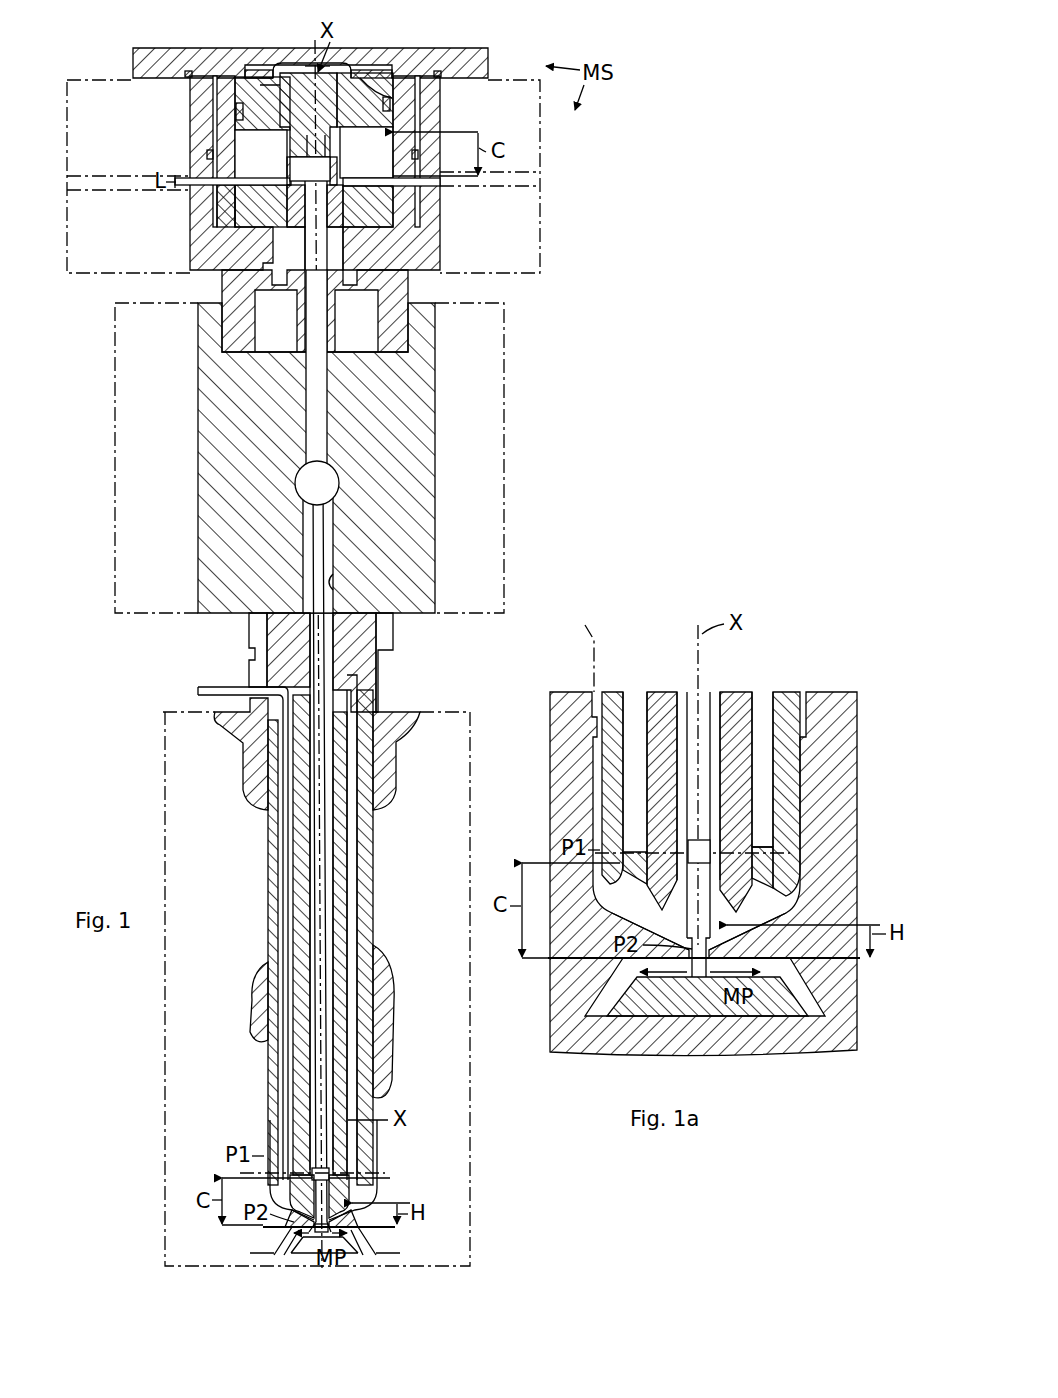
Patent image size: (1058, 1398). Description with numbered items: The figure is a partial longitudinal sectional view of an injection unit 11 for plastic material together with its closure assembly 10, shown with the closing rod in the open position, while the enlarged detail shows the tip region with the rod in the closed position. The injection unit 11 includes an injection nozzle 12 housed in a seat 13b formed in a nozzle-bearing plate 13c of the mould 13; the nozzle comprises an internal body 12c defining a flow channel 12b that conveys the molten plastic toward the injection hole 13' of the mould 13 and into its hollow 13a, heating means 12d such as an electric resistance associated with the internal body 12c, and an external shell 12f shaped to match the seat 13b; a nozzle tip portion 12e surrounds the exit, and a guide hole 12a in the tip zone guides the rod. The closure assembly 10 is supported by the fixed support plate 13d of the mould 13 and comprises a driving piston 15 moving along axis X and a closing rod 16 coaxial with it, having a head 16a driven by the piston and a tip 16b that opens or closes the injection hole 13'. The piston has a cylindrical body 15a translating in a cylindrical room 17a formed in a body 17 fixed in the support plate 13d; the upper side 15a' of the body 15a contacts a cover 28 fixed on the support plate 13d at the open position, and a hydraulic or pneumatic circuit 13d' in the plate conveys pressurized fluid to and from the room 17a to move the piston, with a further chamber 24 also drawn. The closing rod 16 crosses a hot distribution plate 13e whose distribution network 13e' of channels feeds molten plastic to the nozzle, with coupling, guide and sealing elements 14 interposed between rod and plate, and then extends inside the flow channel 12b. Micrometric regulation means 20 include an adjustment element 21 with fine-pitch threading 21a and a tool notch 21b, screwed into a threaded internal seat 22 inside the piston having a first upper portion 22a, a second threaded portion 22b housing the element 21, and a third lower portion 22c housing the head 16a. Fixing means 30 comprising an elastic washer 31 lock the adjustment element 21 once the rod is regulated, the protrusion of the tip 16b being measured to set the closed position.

In FIG. 1, the closure assembly 10 is at (458, 38).
In FIG. 1A, the closure assembly 10 is at (630, 1008).
In FIG. 1, the injection unit 11 is at (128, 74).
In FIG. 1A, the injection unit 11 is at (760, 626).
In FIG. 1, the injection nozzle 12 is at (394, 674).
In FIG. 1A, the guide hole 12a is at (708, 904).
In FIG. 1, the flow channel 12b is at (330, 948).
In FIG. 1A, the flow channel 12b is at (715, 700).
In FIG. 1, the internal body 12c is at (272, 642).
In FIG. 1A, the internal body 12c is at (655, 695).
In FIG. 1, the heating means 12d is at (210, 686).
In FIG. 1A, the heating means 12d is at (762, 692).
In FIG. 1, the nozzle tip 12e is at (360, 1160).
In FIG. 1, the external shell 12f is at (275, 900).
In FIG. 1A, the external shell 12f is at (606, 692).
In FIG. 1, the mould 13 is at (338, 713).
In FIG. 1A, the mould 13 is at (543, 1084).
In FIG. 1, the injection hole 13' is at (303, 1251).
In FIG. 1A, the injection hole 13' is at (717, 1007).
In FIG. 1, the hollow 13a is at (382, 1248).
In FIG. 1A, the hollow 13a is at (800, 990).
In FIG. 1, the seat 13b is at (270, 815).
In FIG. 1A, the seat 13b is at (594, 628).
In FIG. 1, the nozzle-bearing plate 13c is at (405, 712).
In FIG. 1A, the nozzle-bearing plate 13c is at (818, 695).
In FIG. 1, the fixed support plate 13d is at (288, 168).
In FIG. 1, the hydraulic or pneumatic circuit 13d' is at (303, 202).
In FIG. 1, the distribution plate 13e is at (340, 458).
In FIG. 1, the distribution network 13e' is at (315, 531).
In FIG. 1, the coupling, guide and sealing elements 14 is at (415, 288).
In FIG. 1, the driving piston 15 is at (225, 100).
In FIG. 1, the body 15a is at (191, 116).
In FIG. 1, the upper side 15a' is at (393, 56).
In FIG. 1, the closing rod 16 is at (323, 540).
In FIG. 1A, the closing rod 16 is at (690, 692).
In FIG. 1, the head 16a is at (330, 160).
In FIG. 1, the tip 16b is at (348, 1216).
In FIG. 1A, the tip 16b is at (760, 853).
In FIG. 1, the body 17 is at (420, 215).
In FIG. 1, the cylindrical room 17a is at (215, 158).
In FIG. 1, the micrometric regulation means 20 is at (284, 64).
In FIG. 1, the adjustment element 21 is at (405, 102).
In FIG. 1, the threading 21a is at (376, 78).
In FIG. 1, the notch 21b is at (306, 68).
In FIG. 1, the internal seat 22 is at (275, 102).
In FIG. 1, the first upper portion 22a is at (282, 82).
In FIG. 1, the second threaded portion 22b is at (261, 155).
In FIG. 1, the third lower portion 22c is at (345, 192).
In FIG. 1, the cylinder chamber 24 is at (405, 128).
In FIG. 1, the cover 28 is at (200, 55).
In FIG. 1, the fixing means 30 is at (350, 66).
In FIG. 1, the elastic washer 31 is at (358, 72).